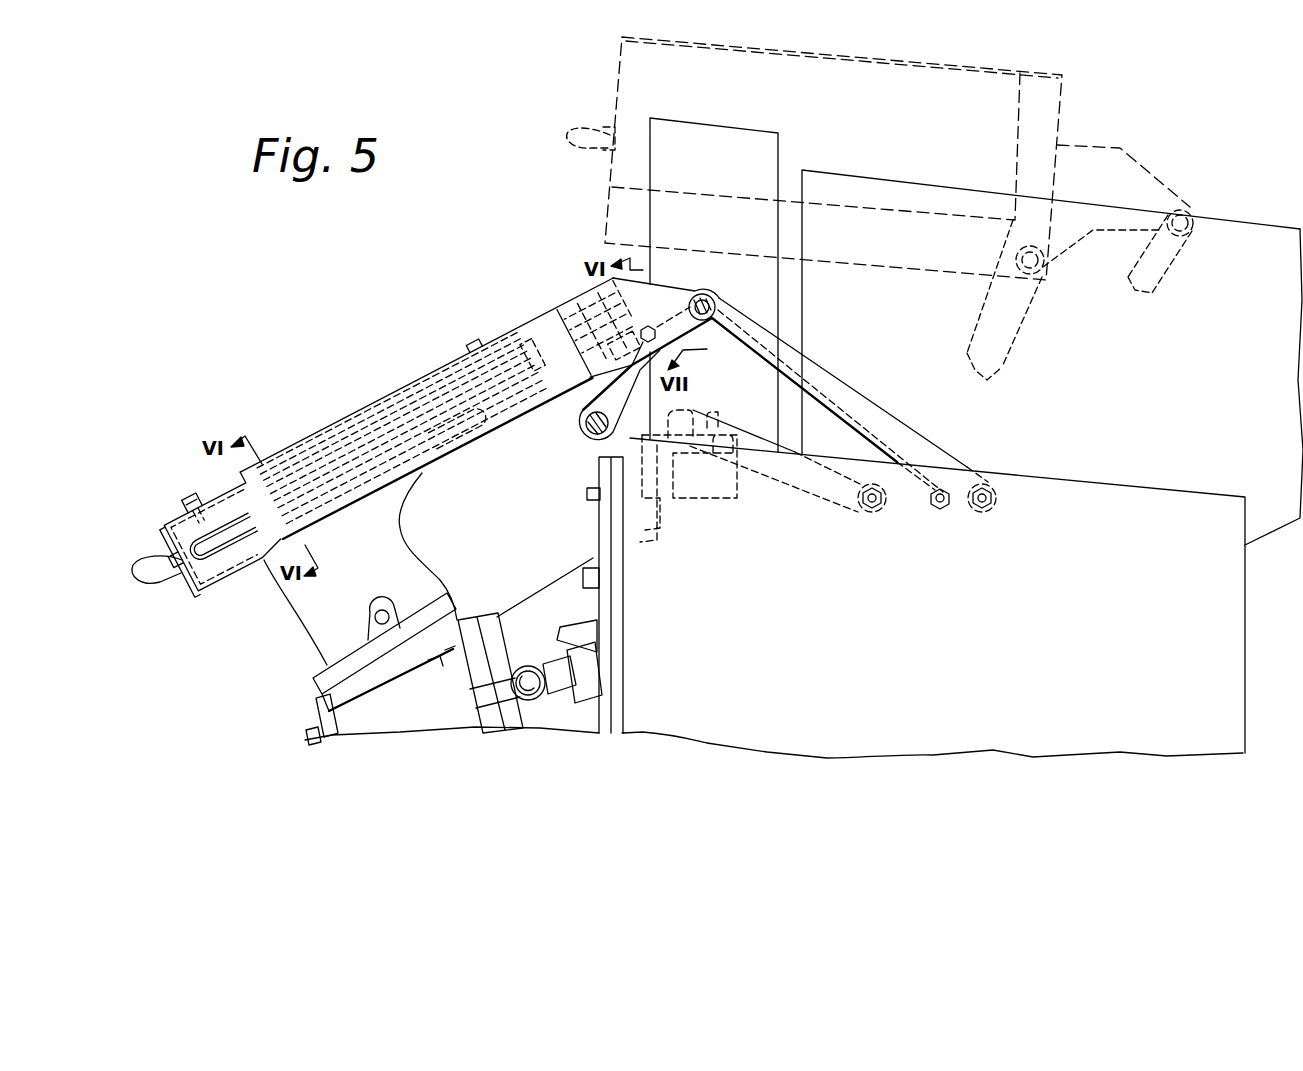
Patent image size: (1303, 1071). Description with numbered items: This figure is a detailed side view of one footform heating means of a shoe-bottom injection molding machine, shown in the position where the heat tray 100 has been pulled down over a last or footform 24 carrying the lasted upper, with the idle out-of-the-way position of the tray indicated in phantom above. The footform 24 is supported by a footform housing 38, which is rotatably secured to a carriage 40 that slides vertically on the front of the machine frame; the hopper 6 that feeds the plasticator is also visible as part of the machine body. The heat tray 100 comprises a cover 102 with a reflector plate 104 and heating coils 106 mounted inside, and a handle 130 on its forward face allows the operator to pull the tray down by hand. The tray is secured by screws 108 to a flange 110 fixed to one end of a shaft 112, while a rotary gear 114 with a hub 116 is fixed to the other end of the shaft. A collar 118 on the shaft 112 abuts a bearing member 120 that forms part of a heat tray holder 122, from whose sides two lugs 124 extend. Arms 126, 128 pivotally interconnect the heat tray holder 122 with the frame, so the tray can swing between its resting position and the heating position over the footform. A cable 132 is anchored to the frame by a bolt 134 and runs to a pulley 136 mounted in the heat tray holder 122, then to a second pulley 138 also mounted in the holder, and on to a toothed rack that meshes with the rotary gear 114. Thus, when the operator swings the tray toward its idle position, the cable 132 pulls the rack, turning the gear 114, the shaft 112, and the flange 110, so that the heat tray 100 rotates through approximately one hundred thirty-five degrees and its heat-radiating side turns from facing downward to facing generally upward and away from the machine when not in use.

The hopper 6 is at (1272, 532).
The last or footform 24 is at (402, 552).
The footform housing 38 is at (415, 718).
The carriage 40 is at (547, 594).
The heat tray 100 is at (187, 523).
The cover 102 is at (713, 45).
The reflector plate 104 is at (170, 546).
The heating coils 106 is at (225, 565).
The screws 108 is at (520, 332).
The flange 110 is at (533, 405).
The shaft 112 is at (565, 358).
The rotary gear 114 is at (598, 287).
The hub 116 is at (656, 290).
The collar 118 is at (577, 308).
The bearing member 120 is at (600, 290).
The heat tray holder 122 is at (687, 290).
The lugs 124 is at (592, 428).
The arm 126 is at (730, 428).
The arm 128 is at (872, 407).
The handle 130 is at (148, 588).
The cable 132 is at (811, 380).
The bolt 134 is at (942, 508).
The pulley 136 is at (693, 345).
The second pulley 138 is at (613, 366).